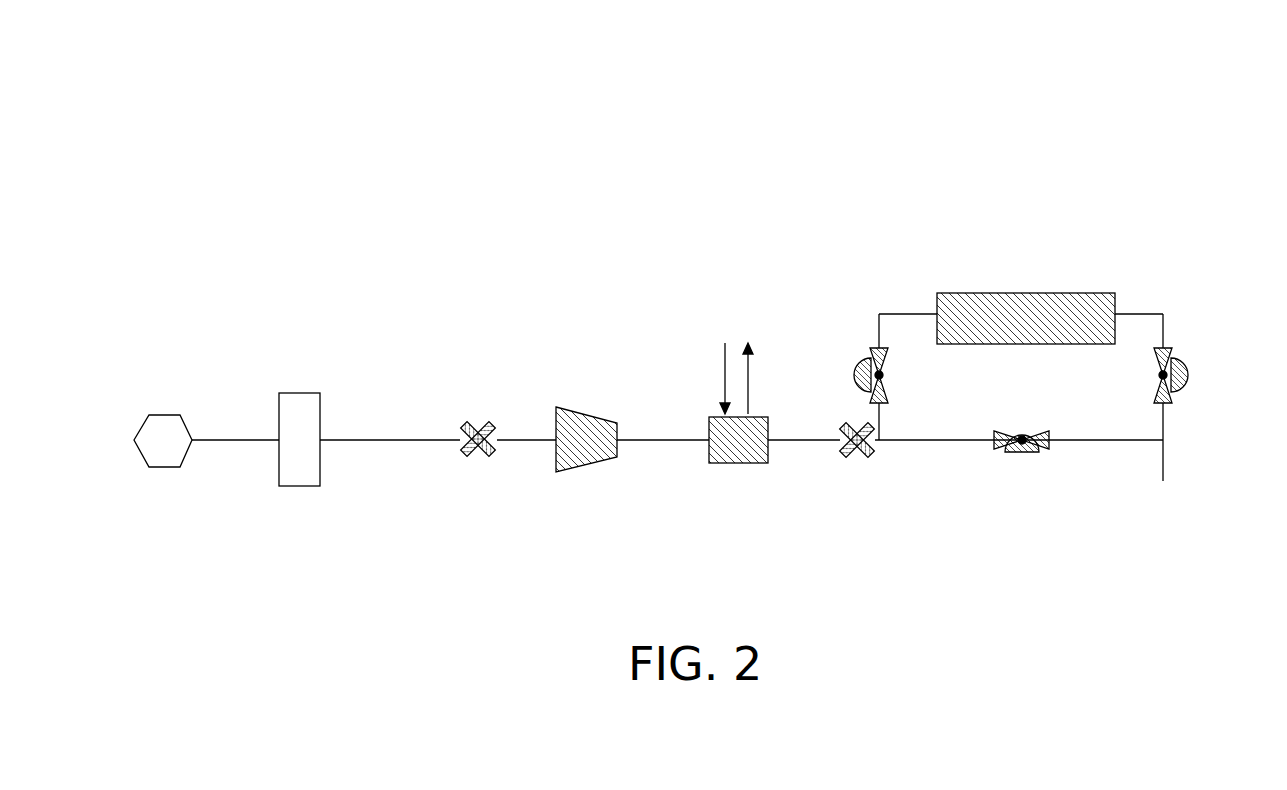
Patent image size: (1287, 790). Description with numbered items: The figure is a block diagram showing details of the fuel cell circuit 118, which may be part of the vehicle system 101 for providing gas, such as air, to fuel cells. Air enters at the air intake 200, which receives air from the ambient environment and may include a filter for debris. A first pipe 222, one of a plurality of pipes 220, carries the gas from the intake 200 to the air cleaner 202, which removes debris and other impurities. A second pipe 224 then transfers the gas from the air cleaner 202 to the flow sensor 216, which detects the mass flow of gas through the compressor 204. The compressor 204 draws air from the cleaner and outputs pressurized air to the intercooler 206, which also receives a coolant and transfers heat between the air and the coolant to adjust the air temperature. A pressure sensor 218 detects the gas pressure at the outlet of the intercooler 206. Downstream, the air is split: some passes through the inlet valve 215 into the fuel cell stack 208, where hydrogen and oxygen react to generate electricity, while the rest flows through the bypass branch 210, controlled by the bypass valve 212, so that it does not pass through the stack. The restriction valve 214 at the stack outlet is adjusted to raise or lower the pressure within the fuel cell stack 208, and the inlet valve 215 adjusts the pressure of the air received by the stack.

The system 101 is at (180, 134).
The fuel cell circuit 118 is at (148, 262).
The air intake 200 is at (162, 480).
The air cleaner 202 is at (290, 487).
The compressor 204 is at (583, 467).
The intercooler 206 is at (733, 464).
The fuel cell stack 208 is at (1000, 292).
The bypass branch 210 is at (945, 442).
The bypass valve 212 is at (1020, 471).
The restriction valve 214 is at (1184, 362).
The inlet valve 215 is at (860, 362).
The flow sensor 216 is at (464, 455).
The pressure sensor 218 is at (850, 456).
The plurality of pipes 220 is at (229, 390).
The first pipe 222 is at (216, 442).
The second pipe 224 is at (346, 439).